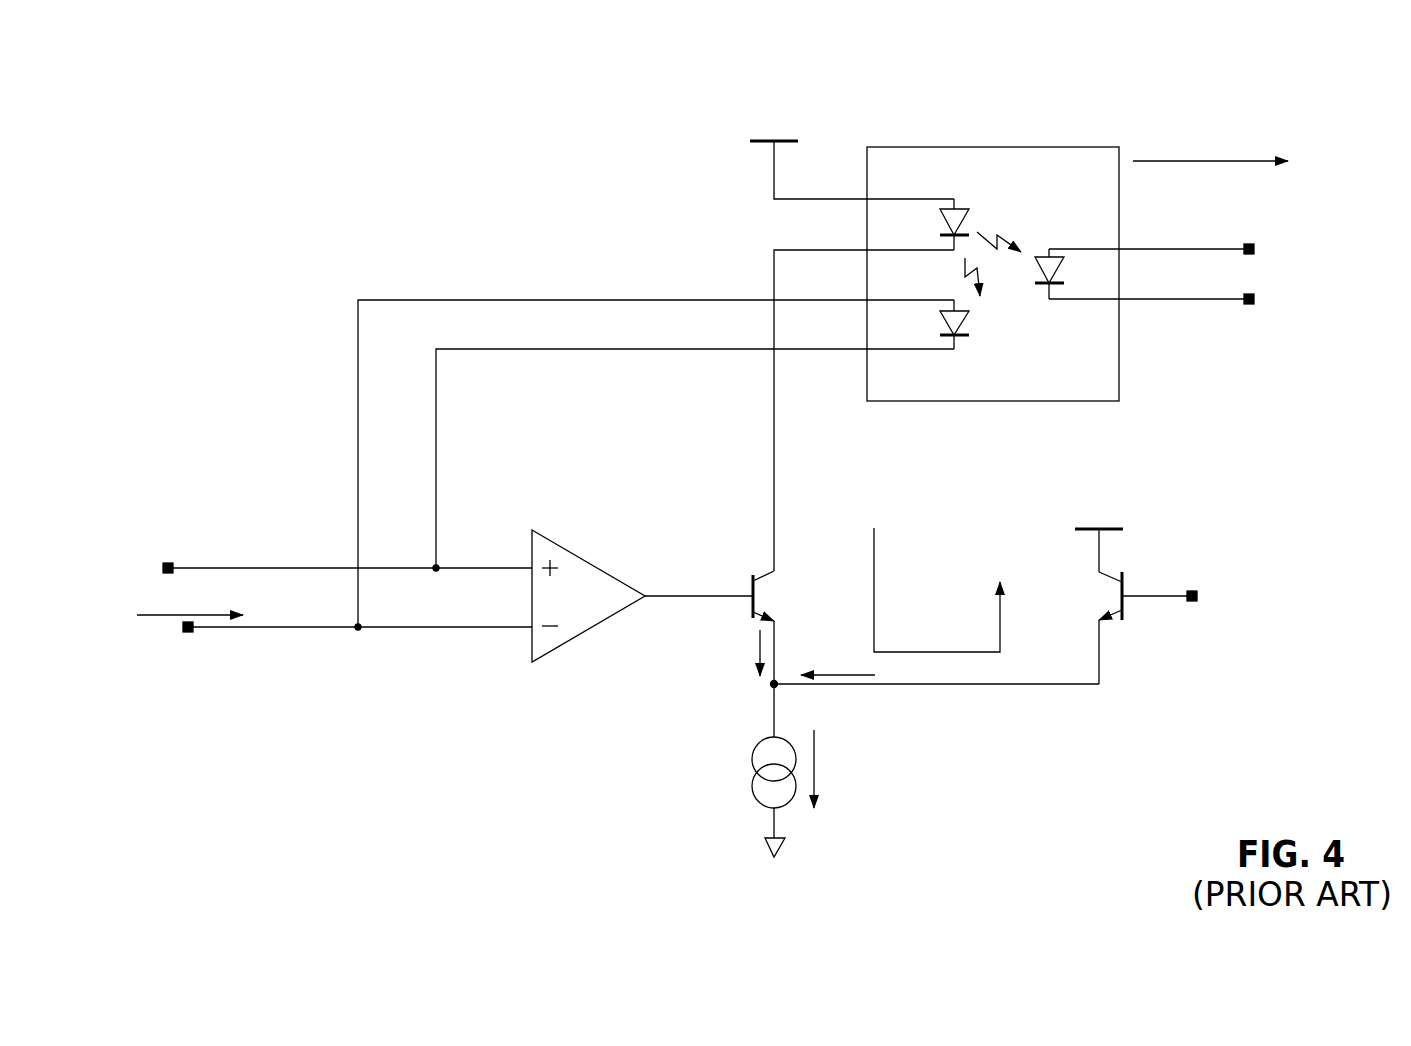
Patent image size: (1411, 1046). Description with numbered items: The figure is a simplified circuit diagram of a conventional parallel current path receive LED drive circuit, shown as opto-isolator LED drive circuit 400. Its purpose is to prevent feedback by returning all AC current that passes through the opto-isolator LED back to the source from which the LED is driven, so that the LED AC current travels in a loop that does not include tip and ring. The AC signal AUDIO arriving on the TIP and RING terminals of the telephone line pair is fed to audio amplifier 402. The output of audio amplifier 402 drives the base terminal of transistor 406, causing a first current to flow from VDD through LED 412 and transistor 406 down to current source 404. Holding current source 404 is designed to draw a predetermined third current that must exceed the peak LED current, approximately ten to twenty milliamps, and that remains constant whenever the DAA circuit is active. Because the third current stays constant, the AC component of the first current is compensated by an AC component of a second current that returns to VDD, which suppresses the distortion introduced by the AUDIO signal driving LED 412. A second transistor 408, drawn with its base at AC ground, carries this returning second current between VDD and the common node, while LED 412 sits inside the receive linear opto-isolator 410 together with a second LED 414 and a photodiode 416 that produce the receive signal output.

The opto-isolator LED drive circuit 400 is at (222, 270).
The audio amplifier 402 is at (573, 637).
The current source 404 is at (755, 785).
The transistor 406 is at (752, 572).
The transistor 408 is at (1122, 622).
The receive linear opto isolator 410 is at (1100, 147).
The LED 412 is at (963, 208).
The LED 414 is at (967, 338).
The photodiode 416 is at (1040, 285).